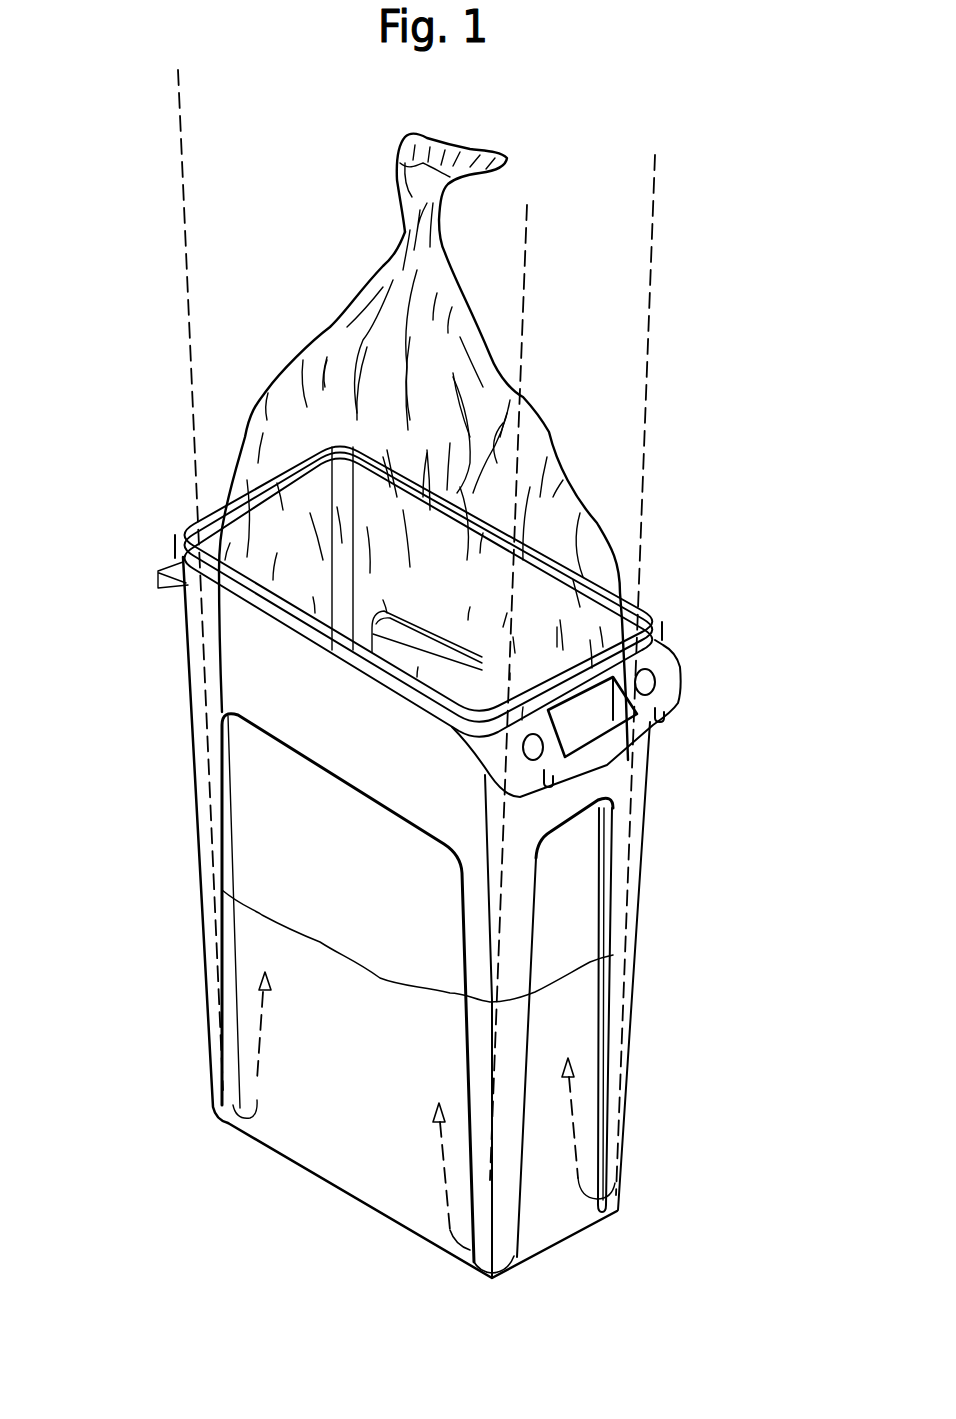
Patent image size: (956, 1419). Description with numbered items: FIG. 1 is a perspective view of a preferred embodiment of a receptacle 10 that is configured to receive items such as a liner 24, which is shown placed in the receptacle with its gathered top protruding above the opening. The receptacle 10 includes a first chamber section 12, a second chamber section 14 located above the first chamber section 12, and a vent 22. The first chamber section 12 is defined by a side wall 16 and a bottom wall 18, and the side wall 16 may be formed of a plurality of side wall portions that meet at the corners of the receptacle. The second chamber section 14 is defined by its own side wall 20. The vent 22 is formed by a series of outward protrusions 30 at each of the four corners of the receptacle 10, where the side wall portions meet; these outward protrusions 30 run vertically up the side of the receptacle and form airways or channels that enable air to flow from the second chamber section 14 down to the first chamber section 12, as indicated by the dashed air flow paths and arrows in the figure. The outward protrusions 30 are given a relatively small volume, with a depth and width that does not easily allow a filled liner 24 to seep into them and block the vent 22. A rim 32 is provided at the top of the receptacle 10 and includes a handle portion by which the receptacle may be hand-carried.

The receptacle 10 is at (770, 548).
The first chamber section 12 is at (160, 1010).
The second chamber section 14 is at (145, 655).
The side wall 16 is at (556, 1220).
The bottom wall 18 is at (350, 1196).
The side wall 20 is at (593, 782).
The vent 22 is at (208, 486).
The liner 24 is at (438, 277).
The outward protrusions 30 is at (195, 815).
The rim 32 is at (658, 620).